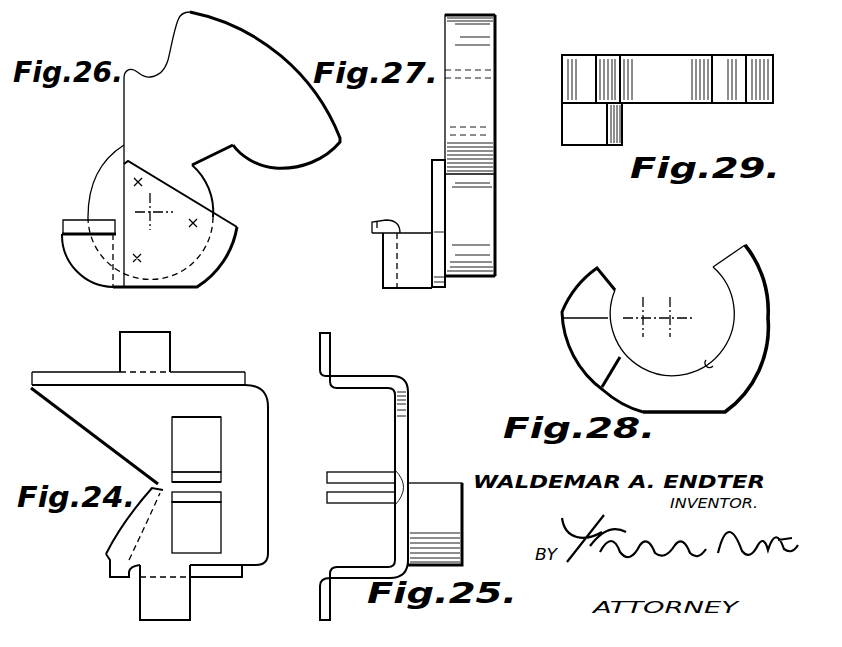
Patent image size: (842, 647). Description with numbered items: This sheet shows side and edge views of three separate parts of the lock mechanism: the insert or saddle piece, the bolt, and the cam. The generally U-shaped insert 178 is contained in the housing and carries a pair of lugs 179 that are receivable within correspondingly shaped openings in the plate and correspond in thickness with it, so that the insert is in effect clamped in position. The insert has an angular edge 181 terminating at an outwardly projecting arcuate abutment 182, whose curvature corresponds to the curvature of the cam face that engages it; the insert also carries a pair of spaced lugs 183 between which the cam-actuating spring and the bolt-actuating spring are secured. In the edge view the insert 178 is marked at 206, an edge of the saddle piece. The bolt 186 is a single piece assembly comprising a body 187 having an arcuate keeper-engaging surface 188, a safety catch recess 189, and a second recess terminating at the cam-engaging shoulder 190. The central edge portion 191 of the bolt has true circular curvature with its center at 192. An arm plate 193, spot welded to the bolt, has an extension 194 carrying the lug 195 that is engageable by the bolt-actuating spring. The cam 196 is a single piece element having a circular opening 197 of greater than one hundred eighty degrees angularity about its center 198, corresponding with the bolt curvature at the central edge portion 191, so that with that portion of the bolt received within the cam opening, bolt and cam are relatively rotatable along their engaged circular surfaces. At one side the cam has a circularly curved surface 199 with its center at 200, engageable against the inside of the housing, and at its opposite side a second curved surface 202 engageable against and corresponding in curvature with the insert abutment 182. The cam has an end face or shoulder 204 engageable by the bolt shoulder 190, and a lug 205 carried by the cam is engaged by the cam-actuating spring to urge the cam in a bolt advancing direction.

In FIG. 24, the insert 178 is at (257, 386).
In FIG. 25, the insert 178 is at (408, 411).
In FIG. 24, the lugs 179 is at (160, 343).
In FIG. 25, the lugs 179 is at (331, 349).
In FIG. 24, the angular edge 181 is at (112, 432).
In FIG. 25, the angular edge 181 is at (397, 428).
In FIG. 24, the arcuate abutment 182 is at (117, 536).
In FIG. 25, the arcuate abutment 182 is at (432, 503).
In FIG. 24, the spaced lugs 183 is at (175, 493).
In FIG. 25, the spaced lugs 183 is at (353, 494).
In FIG. 24, the inclined edge 206 is at (86, 428).
In FIG. 26, the bolt 186 is at (123, 128).
In FIG. 27, the bolt 186 is at (445, 120).
In FIG. 26, the body 187 is at (179, 178).
In FIG. 27, the body 187 is at (463, 127).
In FIG. 26, the arcuate keeper-engaging surface 188 is at (255, 36).
In FIG. 27, the arcuate keeper-engaging surface 188 is at (482, 42).
In FIG. 26, the safety catch recess 189 is at (145, 72).
In FIG. 26, the cam-engaging shoulder 190 is at (208, 156).
In FIG. 26, the central edge portion 191 is at (95, 180).
In FIG. 26, the center 192 is at (157, 218).
In FIG. 26, the arm plate 193 is at (173, 212).
In FIG. 27, the arm plate 193 is at (438, 194).
In FIG. 26, the extension 194 is at (88, 260).
In FIG. 27, the extension 194 is at (407, 263).
In FIG. 26, the lug 195 is at (75, 220).
In FIG. 27, the lug 195 is at (372, 230).
In FIG. 29, the cam 196 is at (697, 55).
In FIG. 28, the cam 196 is at (742, 362).
In FIG. 28, the circular opening 197 is at (709, 366).
In FIG. 28, the center 198 is at (670, 314).
In FIG. 28, the circularly curved surface 199 is at (560, 322).
In FIG. 28, the center 200 is at (643, 316).
In FIG. 28, the second curved surface 202 is at (782, 258).
In FIG. 28, the end face or shoulder 204 is at (735, 245).
In FIG. 29, the lug 205 is at (587, 133).
In FIG. 28, the lug 205 is at (595, 352).